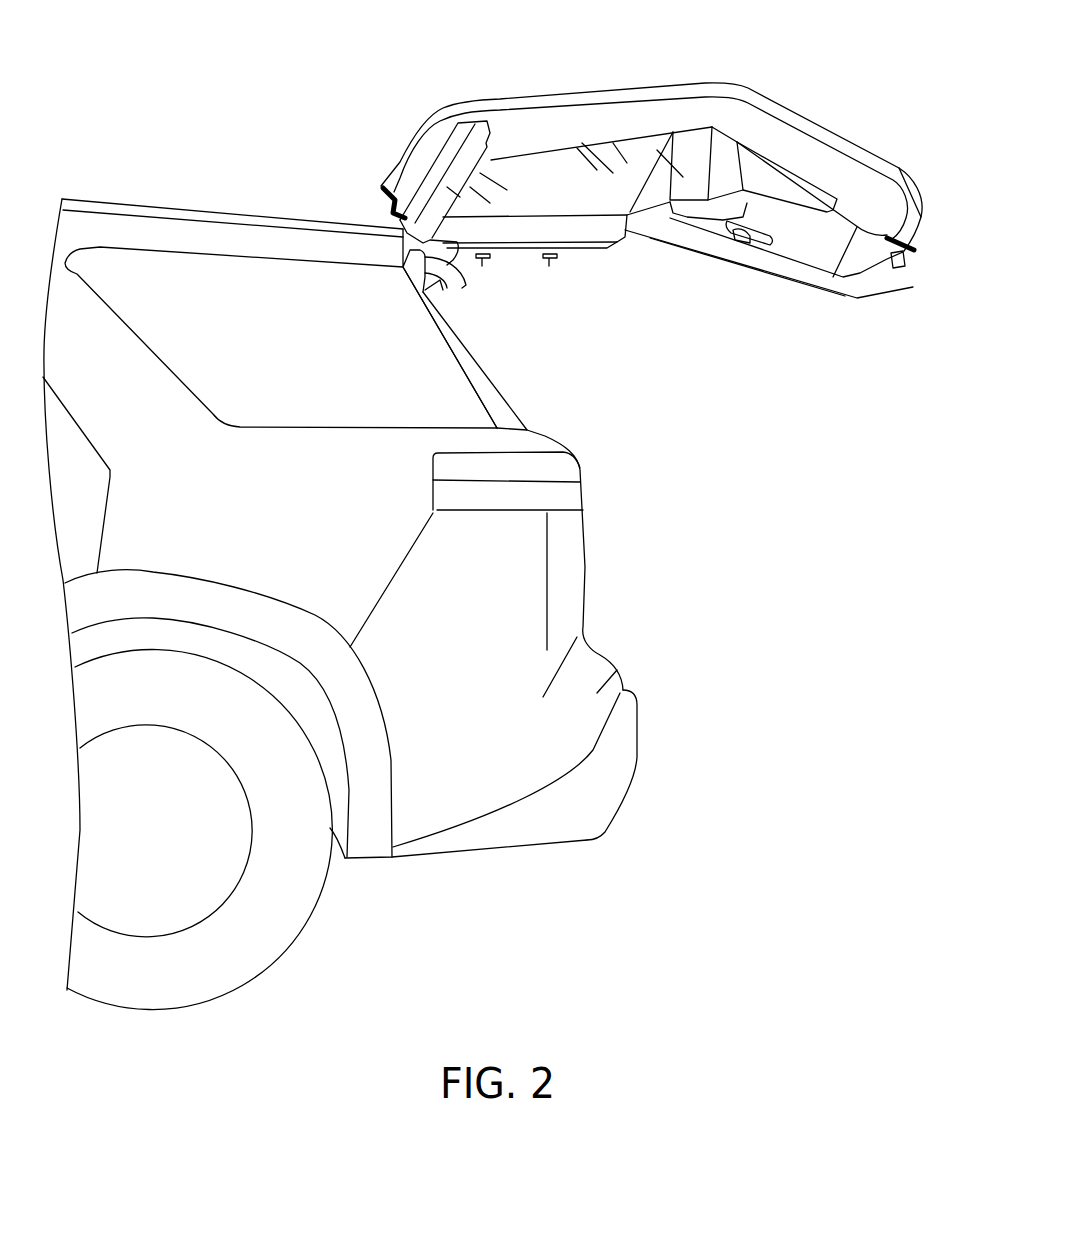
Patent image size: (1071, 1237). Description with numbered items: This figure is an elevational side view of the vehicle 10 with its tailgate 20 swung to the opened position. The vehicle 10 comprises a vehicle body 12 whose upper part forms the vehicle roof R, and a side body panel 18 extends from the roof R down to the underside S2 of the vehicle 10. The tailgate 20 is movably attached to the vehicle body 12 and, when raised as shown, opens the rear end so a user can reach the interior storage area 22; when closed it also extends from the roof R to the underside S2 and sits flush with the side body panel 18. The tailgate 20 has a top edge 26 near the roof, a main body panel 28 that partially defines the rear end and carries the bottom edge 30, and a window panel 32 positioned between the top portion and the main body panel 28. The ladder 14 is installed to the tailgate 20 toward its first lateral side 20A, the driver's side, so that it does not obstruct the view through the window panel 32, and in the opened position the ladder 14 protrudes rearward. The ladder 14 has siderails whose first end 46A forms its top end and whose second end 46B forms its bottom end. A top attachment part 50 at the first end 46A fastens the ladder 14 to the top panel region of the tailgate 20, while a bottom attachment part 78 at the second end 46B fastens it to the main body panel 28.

The vehicle 10 is at (268, 89).
The vehicle body 12 is at (123, 198).
The vehicle roof R is at (185, 207).
The ladder 14 is at (839, 96).
The side body panel 18 is at (503, 623).
The tailgate 20 is at (701, 294).
The first lateral side of the tailgate 20A is at (528, 546).
The interior storage area 22 is at (638, 511).
The top edge of the tailgate 26 is at (393, 228).
The main body panel 28 is at (803, 228).
The bottom edge of the tailgate 30 is at (900, 271).
The window panel 32 is at (570, 190).
The first end of the siderails 46A is at (388, 186).
The second end of the siderails 46B is at (908, 256).
The top attachment part 50 is at (366, 182).
The bottom attachment part 78 is at (929, 236).
The underside of the vehicle S2 is at (431, 884).